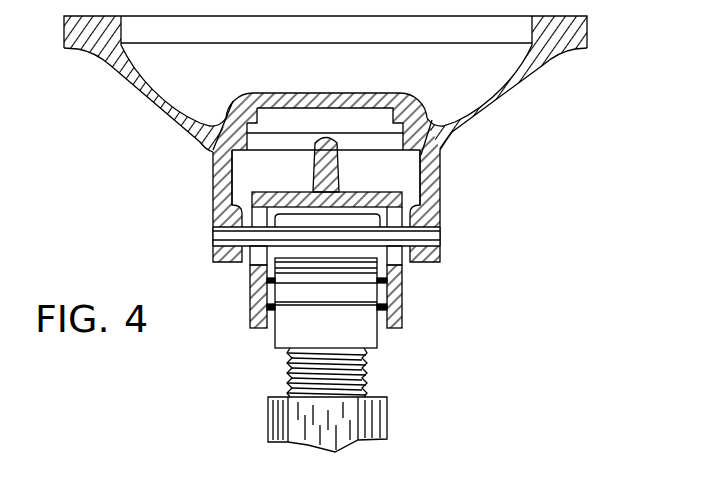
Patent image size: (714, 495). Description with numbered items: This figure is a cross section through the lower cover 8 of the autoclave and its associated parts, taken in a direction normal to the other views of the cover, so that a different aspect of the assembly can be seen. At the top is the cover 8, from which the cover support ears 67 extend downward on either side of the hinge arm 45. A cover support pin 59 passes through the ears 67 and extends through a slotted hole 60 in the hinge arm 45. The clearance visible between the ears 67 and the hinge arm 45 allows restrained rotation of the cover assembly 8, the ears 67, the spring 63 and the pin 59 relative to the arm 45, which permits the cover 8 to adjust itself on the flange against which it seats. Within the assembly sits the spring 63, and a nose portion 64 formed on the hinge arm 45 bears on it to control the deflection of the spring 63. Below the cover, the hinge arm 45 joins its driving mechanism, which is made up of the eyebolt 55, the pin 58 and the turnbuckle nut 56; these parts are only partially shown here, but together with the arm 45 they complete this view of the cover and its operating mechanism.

The lower cover 8 is at (588, 30).
The cover support ears 67 is at (440, 165).
The spring 63 is at (278, 136).
The nose portion 64 is at (339, 167).
The cover support pin 59 is at (440, 234).
The slotted hole 60 is at (403, 262).
The pin 58 is at (268, 330).
The hinge arm 45 is at (403, 318).
The eyebolt 55 is at (378, 340).
The turnbuckle nut 56 is at (388, 407).